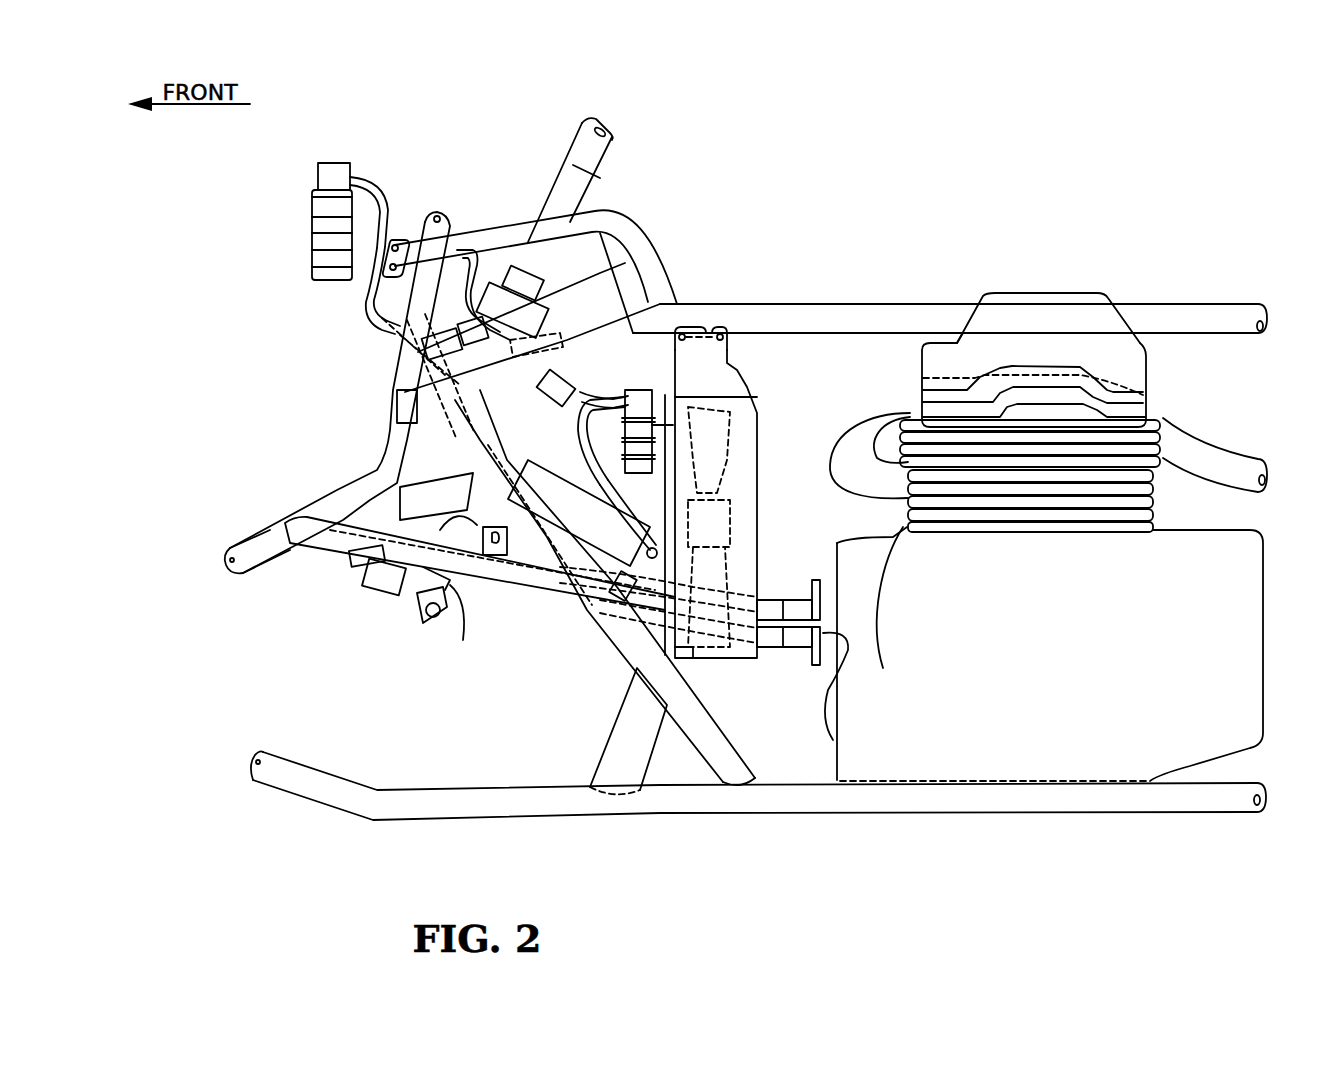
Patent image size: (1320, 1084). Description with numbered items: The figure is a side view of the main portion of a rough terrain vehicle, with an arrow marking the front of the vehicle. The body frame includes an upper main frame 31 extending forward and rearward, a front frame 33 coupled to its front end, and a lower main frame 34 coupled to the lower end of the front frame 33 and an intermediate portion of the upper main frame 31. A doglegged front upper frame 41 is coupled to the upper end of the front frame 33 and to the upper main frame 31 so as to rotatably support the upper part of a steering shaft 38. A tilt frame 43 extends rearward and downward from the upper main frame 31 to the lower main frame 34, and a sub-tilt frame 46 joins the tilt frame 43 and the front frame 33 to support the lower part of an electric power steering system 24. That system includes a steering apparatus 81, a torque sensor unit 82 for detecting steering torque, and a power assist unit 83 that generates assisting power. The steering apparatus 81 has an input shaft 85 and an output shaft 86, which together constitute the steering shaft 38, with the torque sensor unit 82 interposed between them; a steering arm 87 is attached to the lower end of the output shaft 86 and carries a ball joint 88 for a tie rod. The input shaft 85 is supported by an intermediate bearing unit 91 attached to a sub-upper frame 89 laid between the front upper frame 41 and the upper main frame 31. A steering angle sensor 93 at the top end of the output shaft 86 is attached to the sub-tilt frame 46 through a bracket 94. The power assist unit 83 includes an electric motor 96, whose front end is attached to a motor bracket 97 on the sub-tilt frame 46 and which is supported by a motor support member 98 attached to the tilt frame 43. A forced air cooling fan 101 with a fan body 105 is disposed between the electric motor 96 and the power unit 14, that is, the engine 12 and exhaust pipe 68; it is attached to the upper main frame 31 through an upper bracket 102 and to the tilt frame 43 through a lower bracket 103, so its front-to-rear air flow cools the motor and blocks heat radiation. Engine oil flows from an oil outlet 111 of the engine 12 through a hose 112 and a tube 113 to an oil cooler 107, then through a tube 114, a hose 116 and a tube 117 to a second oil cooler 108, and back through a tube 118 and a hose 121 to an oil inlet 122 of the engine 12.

The engine 12 is at (991, 548).
The power unit 14 is at (1047, 285).
The electric power steering system 24 is at (422, 447).
The upper main frame 31 is at (883, 318).
The front frame 33 is at (240, 553).
The lower main frame 34 is at (1157, 800).
The steering shaft 38 is at (630, 150).
The front upper frame 41 is at (637, 247).
The tilt frame 43 is at (707, 747).
The sub-tilt frame 46 is at (300, 548).
The exhaust pipe 68 is at (900, 383).
The steering apparatus 81 is at (546, 162).
The torque sensor unit 82 is at (443, 300).
The power assist unit 83 is at (385, 467).
The input shaft 85 is at (583, 171).
The output shaft 86 is at (420, 582).
The steering arm 87 is at (462, 640).
The ball joint 88 is at (448, 630).
The sub-upper frame 89 is at (538, 224).
The intermediate bearing unit 91 is at (540, 312).
The steering angle sensor 93 is at (365, 588).
The bracket 94 is at (350, 560).
The electric motor 96 is at (573, 582).
The motor bracket 97 is at (513, 558).
The motor support member 98 is at (617, 612).
The forced air cooling fan 101 is at (838, 420).
The upper bracket 102 is at (758, 400).
The lower bracket 103 is at (693, 670).
The fan body 105 is at (745, 462).
The oil cooler 107 is at (682, 327).
The oil cooler 108 is at (312, 240).
The oil outlet 111 is at (822, 610).
The hose 112 is at (767, 605).
The tube 113 is at (585, 462).
The tube 114 is at (600, 393).
The hose 116 is at (528, 395).
The tube 117 is at (383, 299).
The tube 118 is at (378, 327).
The hose 121 is at (420, 459).
The oil inlet 122 is at (833, 660).